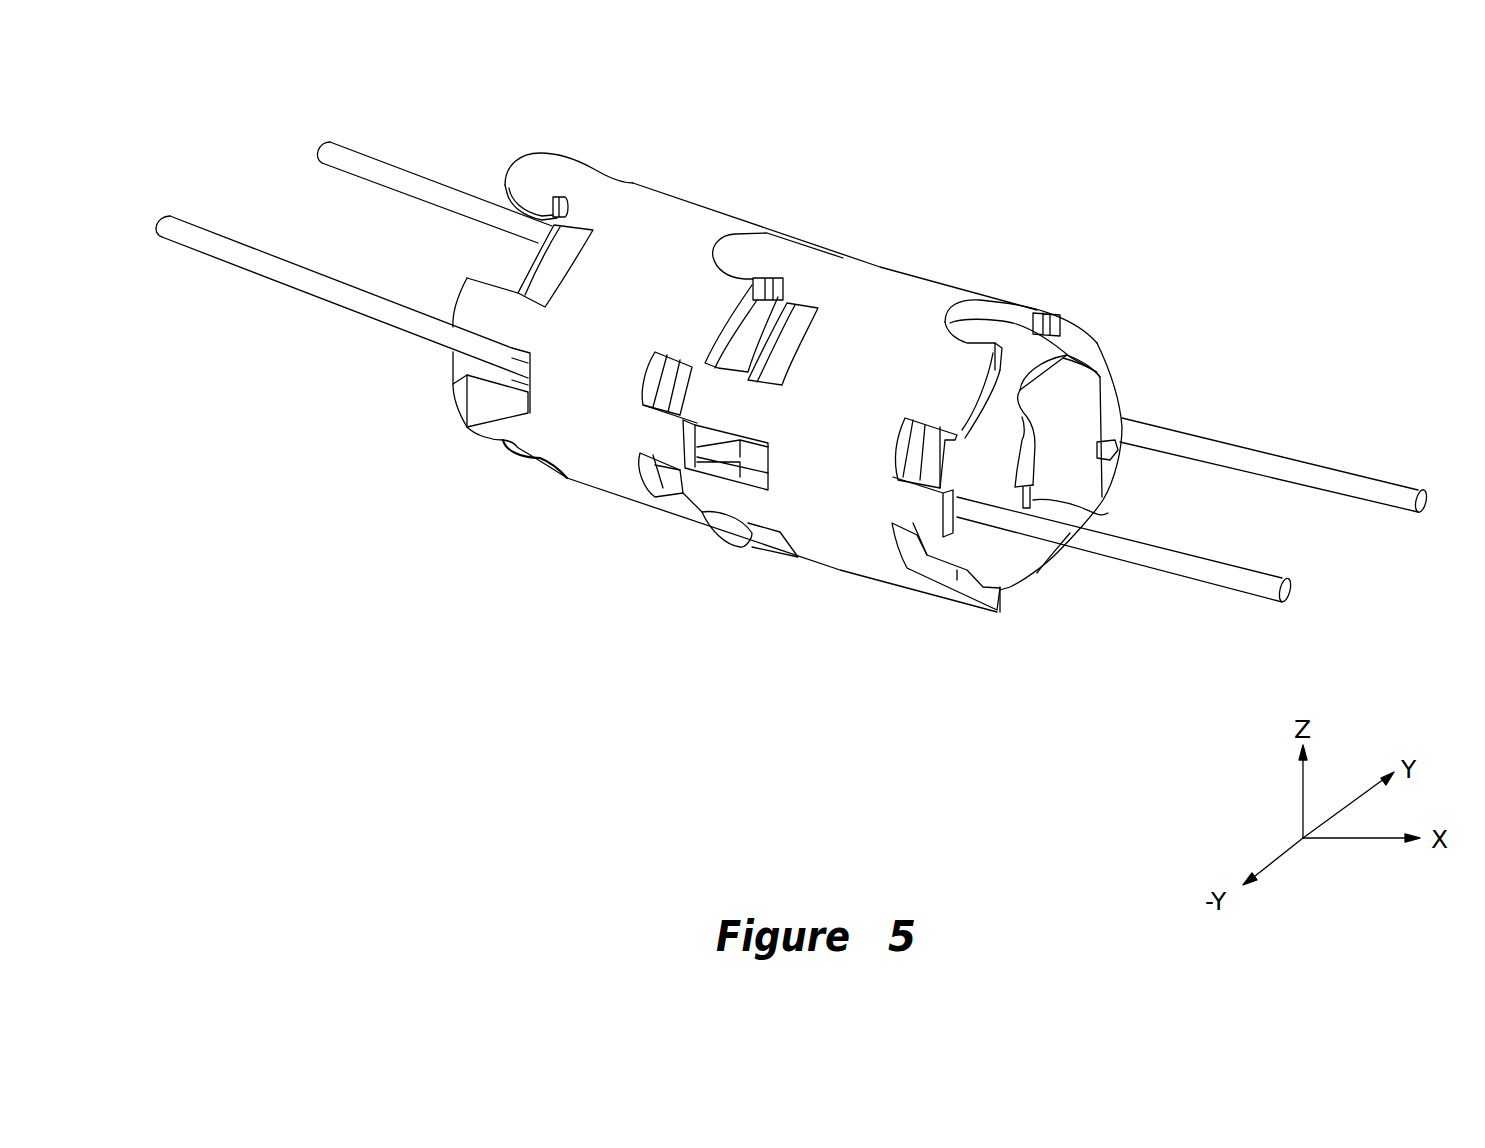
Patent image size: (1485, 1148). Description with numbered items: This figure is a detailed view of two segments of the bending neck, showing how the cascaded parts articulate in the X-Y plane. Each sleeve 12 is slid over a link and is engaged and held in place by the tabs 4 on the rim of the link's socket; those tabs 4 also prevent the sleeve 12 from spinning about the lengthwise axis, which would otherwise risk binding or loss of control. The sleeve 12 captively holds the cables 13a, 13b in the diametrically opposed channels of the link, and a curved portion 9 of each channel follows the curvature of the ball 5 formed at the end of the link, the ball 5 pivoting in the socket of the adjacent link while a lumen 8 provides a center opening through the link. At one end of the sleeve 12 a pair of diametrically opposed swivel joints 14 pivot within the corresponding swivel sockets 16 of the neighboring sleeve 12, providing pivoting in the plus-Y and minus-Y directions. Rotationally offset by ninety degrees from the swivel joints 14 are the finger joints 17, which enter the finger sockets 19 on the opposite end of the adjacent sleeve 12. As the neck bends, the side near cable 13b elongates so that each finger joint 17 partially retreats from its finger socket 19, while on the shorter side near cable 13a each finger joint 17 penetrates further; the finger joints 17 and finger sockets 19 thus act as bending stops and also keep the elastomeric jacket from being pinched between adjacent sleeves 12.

The tabs 4 is at (538, 267).
The ball 5 is at (997, 553).
The lumen 8 is at (1072, 410).
The curved portion 9 is at (1110, 450).
The sleeve 12 is at (655, 321).
The cable 13a is at (1280, 455).
The cable 13b is at (1183, 577).
The swivel joints 14 is at (540, 173).
The swivel sockets 16 is at (723, 235).
The finger joints 17 is at (663, 440).
The finger sockets 19 is at (665, 385).